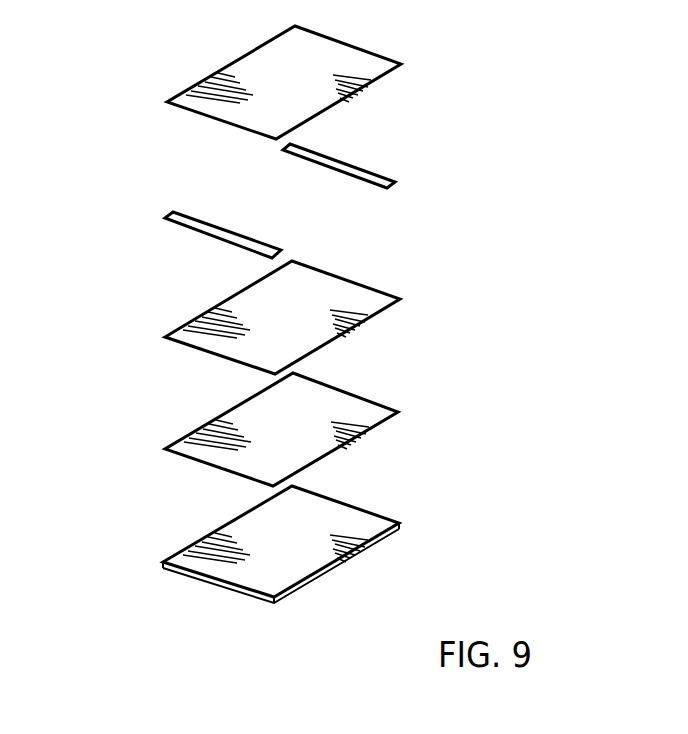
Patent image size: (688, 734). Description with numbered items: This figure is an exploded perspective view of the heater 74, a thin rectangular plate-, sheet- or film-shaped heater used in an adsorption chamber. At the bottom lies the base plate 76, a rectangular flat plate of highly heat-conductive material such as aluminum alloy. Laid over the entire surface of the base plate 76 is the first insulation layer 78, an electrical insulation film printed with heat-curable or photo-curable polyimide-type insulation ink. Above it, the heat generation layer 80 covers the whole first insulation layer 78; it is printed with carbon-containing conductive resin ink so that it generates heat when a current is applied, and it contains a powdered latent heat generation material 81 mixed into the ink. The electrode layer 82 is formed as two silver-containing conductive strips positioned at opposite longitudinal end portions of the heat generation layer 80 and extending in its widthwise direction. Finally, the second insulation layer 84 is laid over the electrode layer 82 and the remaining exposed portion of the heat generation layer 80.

The heater 74 is at (108, 355).
The base plate 76 is at (345, 513).
The first insulation layer 78 is at (345, 402).
The heat generation layer 80 is at (333, 280).
The latent heat generation material 81 is at (347, 290).
The electrode layer 82 is at (335, 163).
The second insulation layer 84 is at (347, 55).